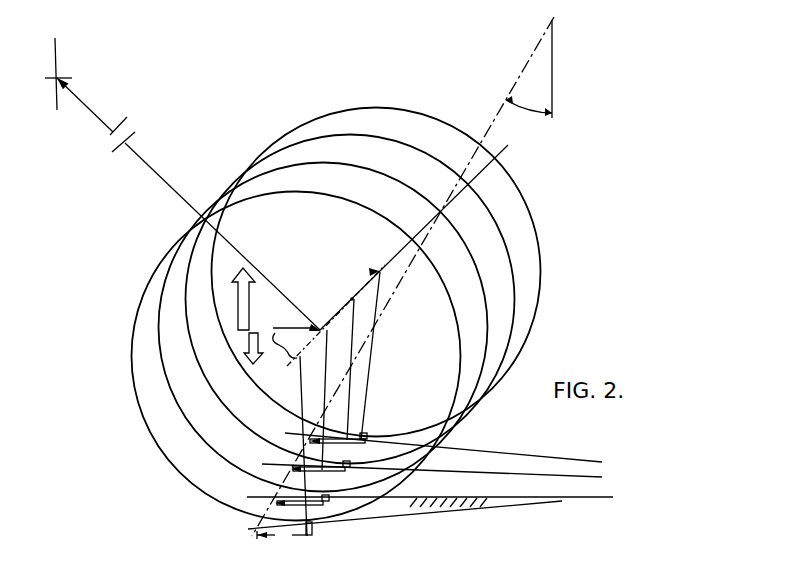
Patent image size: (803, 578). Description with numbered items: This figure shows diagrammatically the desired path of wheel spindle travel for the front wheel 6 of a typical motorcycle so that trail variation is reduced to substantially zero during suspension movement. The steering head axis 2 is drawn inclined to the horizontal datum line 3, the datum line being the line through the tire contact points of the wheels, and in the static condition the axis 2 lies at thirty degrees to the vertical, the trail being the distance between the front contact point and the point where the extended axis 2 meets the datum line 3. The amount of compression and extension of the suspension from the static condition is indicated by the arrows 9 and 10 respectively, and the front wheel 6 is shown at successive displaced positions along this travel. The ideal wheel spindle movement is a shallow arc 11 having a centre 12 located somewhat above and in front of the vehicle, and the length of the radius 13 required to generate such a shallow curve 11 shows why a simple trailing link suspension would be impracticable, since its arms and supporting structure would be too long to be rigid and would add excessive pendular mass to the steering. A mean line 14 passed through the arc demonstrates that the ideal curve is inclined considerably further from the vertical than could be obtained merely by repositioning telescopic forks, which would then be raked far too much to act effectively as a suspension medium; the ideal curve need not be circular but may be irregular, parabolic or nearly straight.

The steering head axis 2 is at (531, 58).
The horizontal datum line 3 is at (543, 497).
The front wheel 6 is at (158, 312).
The compression arrow 9 is at (236, 310).
The extension arrow 10 is at (248, 347).
The shallow arc 11 is at (379, 262).
The centre 12 is at (60, 77).
The radius 13 is at (175, 192).
The mean line 14 is at (484, 179).